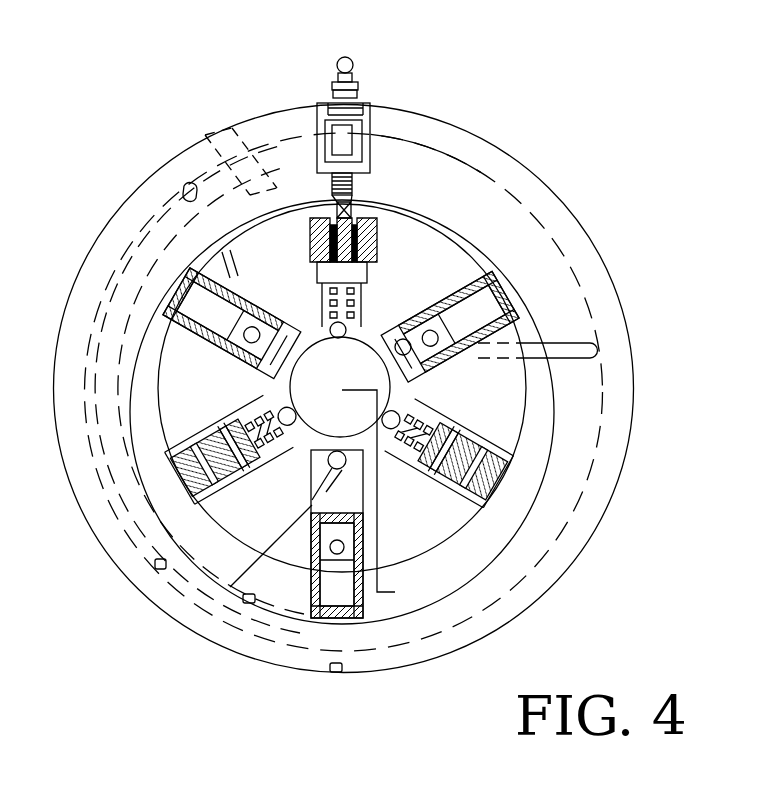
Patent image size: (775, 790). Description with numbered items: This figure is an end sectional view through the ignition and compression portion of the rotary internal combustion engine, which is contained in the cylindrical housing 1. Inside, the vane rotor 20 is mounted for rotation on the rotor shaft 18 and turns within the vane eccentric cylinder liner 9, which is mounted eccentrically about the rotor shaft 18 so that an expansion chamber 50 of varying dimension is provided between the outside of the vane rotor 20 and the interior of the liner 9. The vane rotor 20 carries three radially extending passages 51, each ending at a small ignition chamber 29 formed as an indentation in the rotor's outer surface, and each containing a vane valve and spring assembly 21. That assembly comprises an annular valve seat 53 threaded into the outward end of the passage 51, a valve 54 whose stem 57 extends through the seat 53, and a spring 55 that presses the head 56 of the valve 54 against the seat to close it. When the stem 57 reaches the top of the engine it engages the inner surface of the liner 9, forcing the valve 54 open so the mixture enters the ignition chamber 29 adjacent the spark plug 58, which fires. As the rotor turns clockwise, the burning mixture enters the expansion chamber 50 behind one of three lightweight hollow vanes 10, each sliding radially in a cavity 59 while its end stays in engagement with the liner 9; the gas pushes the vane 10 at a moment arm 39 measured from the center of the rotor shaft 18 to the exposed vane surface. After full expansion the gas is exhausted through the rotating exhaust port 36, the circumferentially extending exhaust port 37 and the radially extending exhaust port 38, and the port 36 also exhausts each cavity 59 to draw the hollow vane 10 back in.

The cylindrical housing 1 is at (487, 148).
The vane eccentric cylinder liner 9 is at (510, 227).
The vane 10 is at (477, 150).
The rotor shaft 18 is at (362, 389).
The vane rotor 20 is at (500, 253).
The vane valve and spring assembly 21 is at (420, 418).
The ignition chamber 29 is at (380, 215).
The rotating exhaust port 36 is at (590, 350).
The circumferentially extending exhaust port 37 is at (130, 293).
The radially extending exhaust port 38 is at (227, 137).
The moment arm 39 is at (388, 592).
The expansion chamber 50 is at (510, 463).
The radially extending passage 51 is at (316, 218).
The annular valve seat 53 is at (402, 205).
The valve 54 is at (370, 236).
The spring 55 is at (357, 298).
The valve head 56 is at (358, 270).
The valve stem 57 is at (302, 205).
The spark plug 58 is at (349, 70).
The vane cavity 59 is at (297, 331).